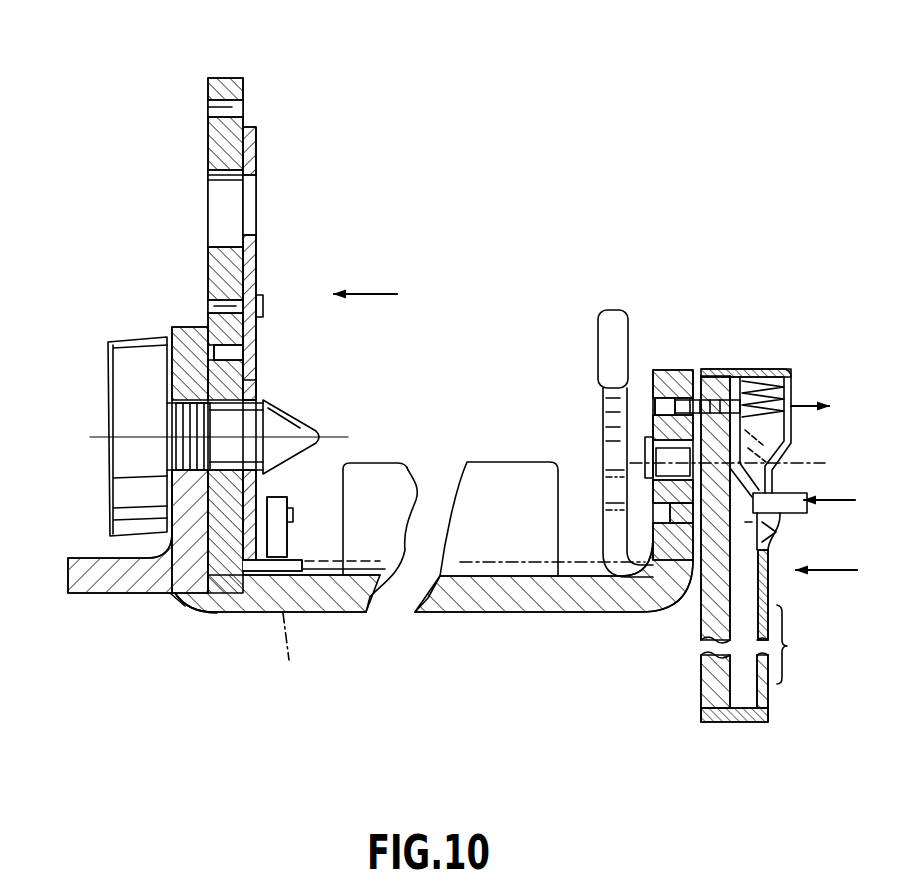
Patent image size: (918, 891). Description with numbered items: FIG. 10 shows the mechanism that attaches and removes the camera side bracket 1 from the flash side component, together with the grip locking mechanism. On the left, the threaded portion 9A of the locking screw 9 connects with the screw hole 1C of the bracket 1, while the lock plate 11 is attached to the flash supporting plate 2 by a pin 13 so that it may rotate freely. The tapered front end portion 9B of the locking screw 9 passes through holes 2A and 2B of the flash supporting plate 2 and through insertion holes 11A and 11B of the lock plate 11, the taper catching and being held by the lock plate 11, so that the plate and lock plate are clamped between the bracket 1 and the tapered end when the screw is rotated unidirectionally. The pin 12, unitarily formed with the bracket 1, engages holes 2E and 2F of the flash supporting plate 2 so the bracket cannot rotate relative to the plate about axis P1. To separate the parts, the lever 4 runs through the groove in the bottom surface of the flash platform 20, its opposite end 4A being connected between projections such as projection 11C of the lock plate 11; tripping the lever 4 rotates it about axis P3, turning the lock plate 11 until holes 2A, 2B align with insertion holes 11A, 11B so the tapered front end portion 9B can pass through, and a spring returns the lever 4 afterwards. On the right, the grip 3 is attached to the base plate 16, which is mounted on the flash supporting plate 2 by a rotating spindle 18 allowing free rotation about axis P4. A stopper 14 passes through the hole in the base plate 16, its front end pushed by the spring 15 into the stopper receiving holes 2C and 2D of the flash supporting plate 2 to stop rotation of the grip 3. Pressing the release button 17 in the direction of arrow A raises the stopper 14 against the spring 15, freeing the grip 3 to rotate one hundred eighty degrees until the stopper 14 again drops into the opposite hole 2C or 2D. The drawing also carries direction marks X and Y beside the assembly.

The bracket 1 is at (98, 583).
The screw hole 1C is at (205, 398).
The flash supporting plate 2 is at (233, 123).
The hole 2A is at (212, 185).
The hole 2B is at (175, 597).
The stopper receiving hole 2C is at (652, 402).
The stopper receiving hole 2D is at (672, 512).
The hole 2E is at (240, 352).
The hole 2F is at (225, 100).
The grip 3 is at (745, 722).
The lever 4 is at (603, 400).
The opposite end 4A is at (268, 530).
The locking screw 9 is at (113, 360).
The threaded portion 9A is at (195, 410).
The tapered front end portion 9B is at (280, 455).
The lock plate 11 is at (250, 138).
The insertion hole 11A is at (253, 197).
The insertion hole 11B is at (258, 398).
The projection 11C is at (302, 613).
The pin 12 is at (212, 342).
The pin 13 is at (267, 300).
The stopper 14 is at (758, 370).
The spring 15 is at (770, 372).
The base plate 16 is at (717, 690).
The release button 17 is at (772, 540).
The rotating spindle 18 is at (678, 447).
The flash platform 20 is at (525, 530).
The axis P1 is at (93, 437).
The axis P3 is at (289, 658).
The axis P4 is at (748, 465).
The arrow A is at (800, 406).
The direction X is at (838, 573).
The direction Y is at (380, 295).